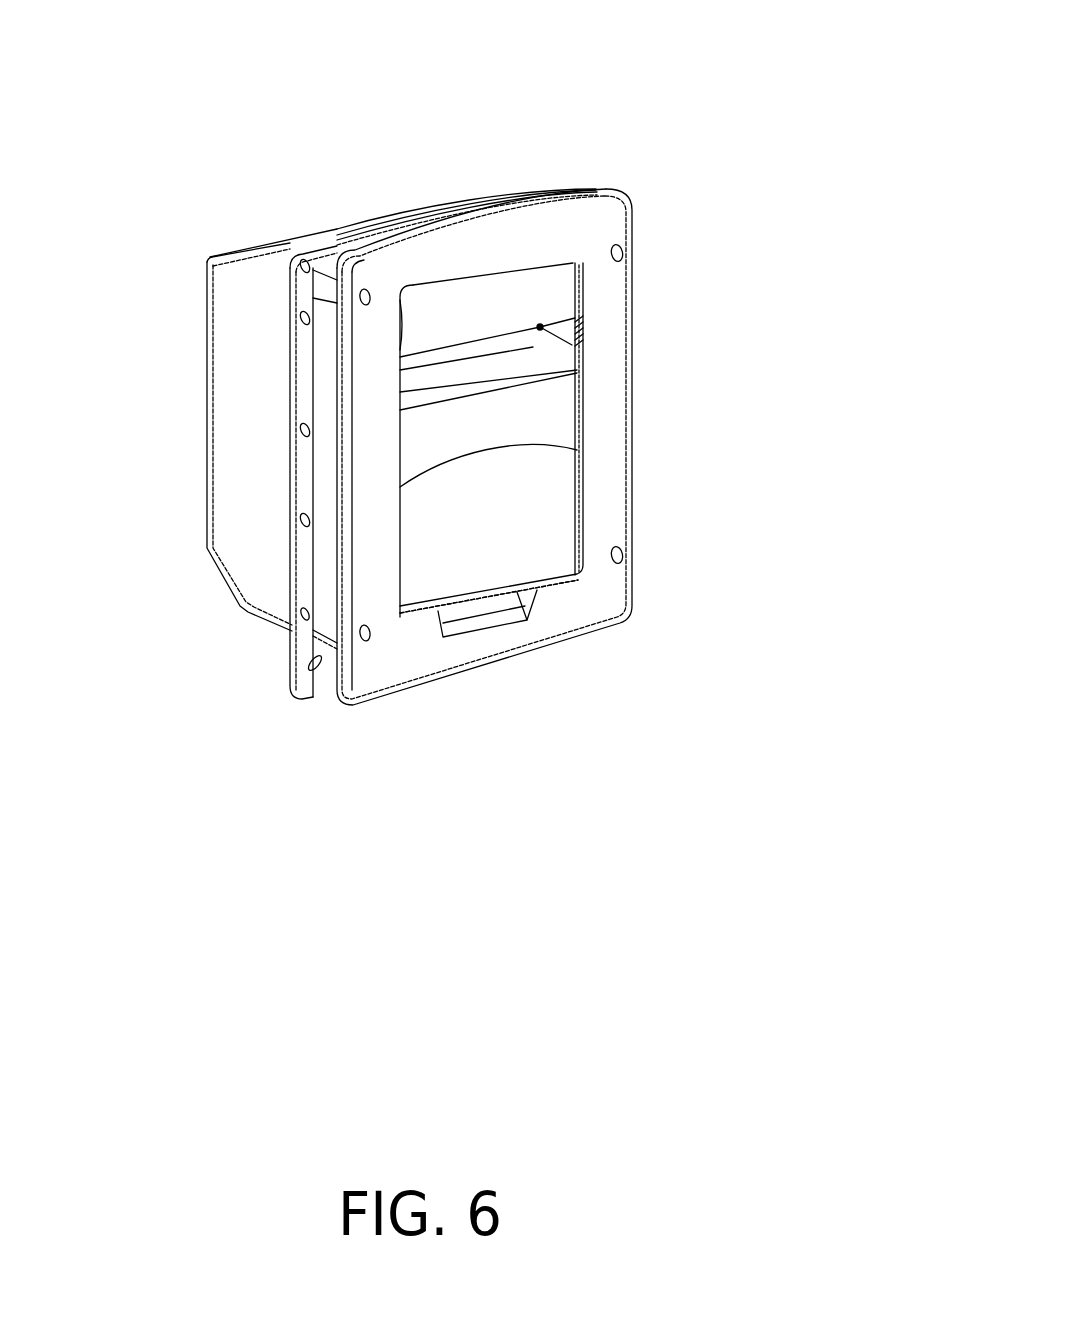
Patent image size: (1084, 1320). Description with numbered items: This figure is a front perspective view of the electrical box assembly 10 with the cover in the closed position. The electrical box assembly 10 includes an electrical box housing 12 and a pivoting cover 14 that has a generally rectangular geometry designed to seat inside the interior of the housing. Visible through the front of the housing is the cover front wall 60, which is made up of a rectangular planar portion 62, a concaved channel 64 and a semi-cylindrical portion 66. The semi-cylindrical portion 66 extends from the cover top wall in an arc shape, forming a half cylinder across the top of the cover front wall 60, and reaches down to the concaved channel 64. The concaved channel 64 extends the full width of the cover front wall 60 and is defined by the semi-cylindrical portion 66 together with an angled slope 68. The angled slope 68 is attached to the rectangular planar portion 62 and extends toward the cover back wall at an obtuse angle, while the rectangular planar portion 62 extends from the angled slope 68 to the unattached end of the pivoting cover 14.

The electrical box assembly 10 is at (755, 89).
The electrical box housing 12 is at (207, 377).
The pivoting cover 14 is at (440, 551).
The cover front wall 60 is at (552, 492).
The rectangular planar portion 62 is at (545, 535).
The concaved channel 64 is at (540, 327).
The semi-cylindrical portion 66 is at (545, 285).
The angled slope 68 is at (533, 347).